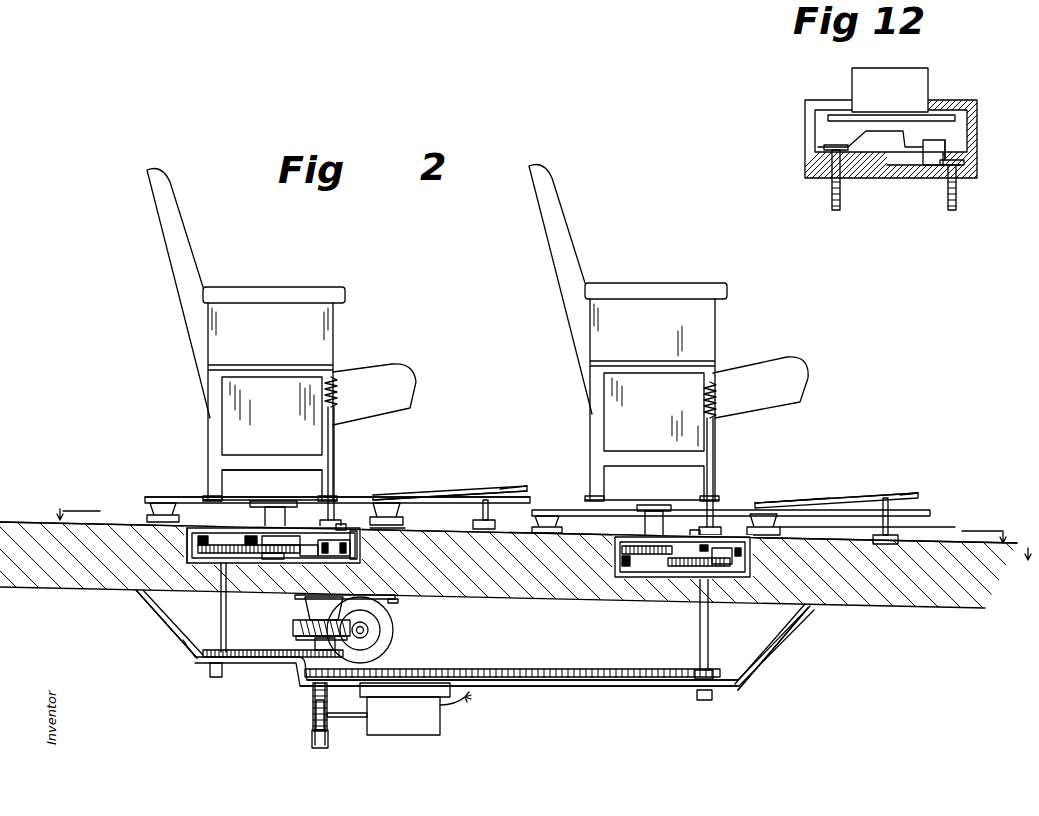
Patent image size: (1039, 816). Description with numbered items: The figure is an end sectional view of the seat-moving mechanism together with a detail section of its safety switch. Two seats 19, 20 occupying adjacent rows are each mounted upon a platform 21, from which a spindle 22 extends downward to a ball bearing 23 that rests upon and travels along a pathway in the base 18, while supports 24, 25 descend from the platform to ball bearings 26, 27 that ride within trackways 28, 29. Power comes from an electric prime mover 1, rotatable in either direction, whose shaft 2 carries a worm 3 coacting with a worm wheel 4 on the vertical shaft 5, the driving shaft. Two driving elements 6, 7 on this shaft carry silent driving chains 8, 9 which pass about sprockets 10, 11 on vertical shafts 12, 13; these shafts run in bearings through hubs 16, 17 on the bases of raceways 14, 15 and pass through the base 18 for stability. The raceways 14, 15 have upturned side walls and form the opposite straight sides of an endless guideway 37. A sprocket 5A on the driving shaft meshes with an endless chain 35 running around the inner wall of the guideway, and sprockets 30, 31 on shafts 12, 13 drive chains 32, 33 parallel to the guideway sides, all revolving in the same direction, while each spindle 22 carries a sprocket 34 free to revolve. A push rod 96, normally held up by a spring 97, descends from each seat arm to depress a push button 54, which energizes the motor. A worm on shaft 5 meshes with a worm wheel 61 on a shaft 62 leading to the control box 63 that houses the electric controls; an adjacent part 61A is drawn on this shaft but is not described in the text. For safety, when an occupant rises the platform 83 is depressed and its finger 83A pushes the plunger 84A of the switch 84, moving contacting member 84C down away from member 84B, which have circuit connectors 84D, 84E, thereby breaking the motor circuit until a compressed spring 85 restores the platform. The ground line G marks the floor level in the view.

In FIG. 2, the electric prime mover 1 is at (384, 635).
In FIG. 2, the shaft 2 is at (395, 640).
In FIG. 2, the worm 3 is at (366, 630).
In FIG. 2, the worm wheel 4 is at (293, 632).
In FIG. 2, the vertical shaft 5 is at (305, 601).
In FIG. 2, the sprocket 5A is at (352, 515).
In FIG. 2, the driving element 6 is at (300, 681).
In FIG. 2, the driving element 7 is at (315, 708).
In FIG. 2, the silent driving chain 8 is at (250, 662).
In FIG. 2, the silent driving chain 9 is at (546, 669).
In FIG. 2, the sprocket 10 is at (214, 678).
In FIG. 2, the sprocket 11 is at (725, 699).
In FIG. 2, the vertical shaft 12 is at (709, 638).
In FIG. 2, the vertical shaft 13 is at (227, 612).
In FIG. 2, the raceway 14 is at (812, 612).
In FIG. 2, the raceway 15 is at (172, 600).
In FIG. 2, the hub 16 is at (216, 566).
In FIG. 2, the hub 17 is at (689, 582).
In FIG. 2, the base 18 is at (180, 650).
In FIG. 2, the seat 19 is at (682, 345).
In FIG. 2, the seat 20 is at (250, 428).
In FIG. 2, the platform 21 is at (352, 540).
In FIG. 2, the spindle 22 is at (292, 505).
In FIG. 2, the ball bearing 23 is at (294, 628).
In FIG. 2, the support 24 is at (400, 503).
In FIG. 2, the support 25 is at (160, 510).
In FIG. 2, the ball bearing 26 is at (400, 526).
In FIG. 2, the ball bearing 27 is at (178, 524).
In FIG. 2, the trackway 28 is at (378, 527).
In FIG. 2, the trackway 29 is at (523, 624).
In FIG. 2, the sprocket 30 is at (718, 546).
In FIG. 2, the sprocket 31 is at (238, 518).
In FIG. 2, the chain 32 is at (795, 504).
In FIG. 2, the chain 33 is at (165, 595).
In FIG. 2, the sprocket 34 is at (312, 543).
In FIG. 2, the endless chain 35 is at (316, 530).
In FIG. 2, the endless guideway 37 is at (260, 518).
In FIG. 2, the push button 54 is at (338, 524).
In FIG. 2, the worm wheel 61 is at (312, 741).
In FIG. 2, the sleeve 61A is at (312, 735).
In FIG. 2, the shaft 62 is at (345, 722).
In FIG. 2, the control box 63 is at (444, 735).
In FIG. 2, the platform 83 is at (440, 492).
In FIG. 2, the finger 83A is at (897, 515).
In FIG. 2, the switch 84 is at (492, 524).
In FIG. 12, the switch 84 is at (978, 108).
In FIG. 12, the plunger 84A is at (910, 70).
In FIG. 12, the contacting member 84B is at (945, 145).
In FIG. 12, the contacting member 84C is at (920, 150).
In FIG. 12, the circuit connector 84D is at (833, 203).
In FIG. 12, the circuit connector 84E is at (957, 205).
In FIG. 2, the compressed spring 85 is at (526, 492).
In FIG. 2, the push rod 96 is at (336, 433).
In FIG. 2, the spring 97 is at (340, 392).
In FIG. 2, the ground G is at (935, 548).